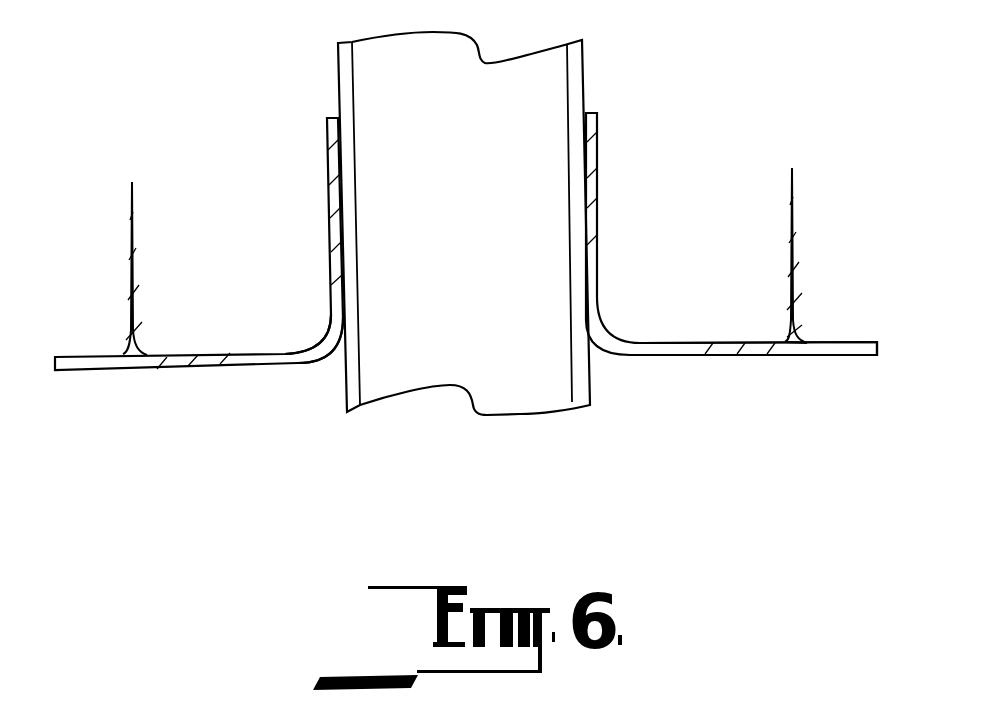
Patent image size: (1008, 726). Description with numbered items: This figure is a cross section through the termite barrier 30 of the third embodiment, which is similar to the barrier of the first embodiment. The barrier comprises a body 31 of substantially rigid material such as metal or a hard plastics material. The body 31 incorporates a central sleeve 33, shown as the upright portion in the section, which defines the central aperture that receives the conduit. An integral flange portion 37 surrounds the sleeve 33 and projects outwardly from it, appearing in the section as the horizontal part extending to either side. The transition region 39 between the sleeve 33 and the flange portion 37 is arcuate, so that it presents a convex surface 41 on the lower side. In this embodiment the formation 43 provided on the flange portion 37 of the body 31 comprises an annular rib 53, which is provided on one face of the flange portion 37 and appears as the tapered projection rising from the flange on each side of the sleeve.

The termite barrier 30 is at (286, 236).
The body 31 is at (182, 366).
The central sleeve 33 is at (598, 133).
The flange portion 37 is at (702, 343).
The transition region 39 is at (317, 343).
The convex surface 41 is at (300, 365).
The formation 43 is at (819, 325).
The annular rib 53 is at (794, 206).